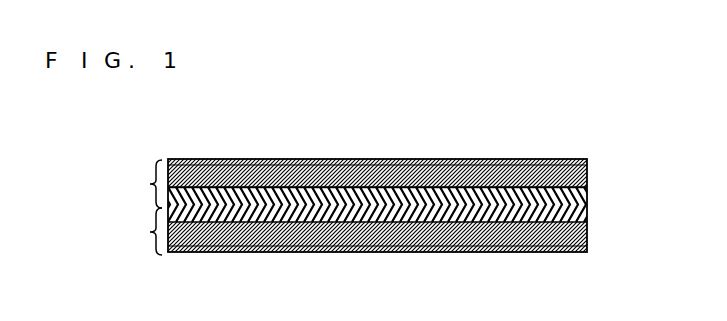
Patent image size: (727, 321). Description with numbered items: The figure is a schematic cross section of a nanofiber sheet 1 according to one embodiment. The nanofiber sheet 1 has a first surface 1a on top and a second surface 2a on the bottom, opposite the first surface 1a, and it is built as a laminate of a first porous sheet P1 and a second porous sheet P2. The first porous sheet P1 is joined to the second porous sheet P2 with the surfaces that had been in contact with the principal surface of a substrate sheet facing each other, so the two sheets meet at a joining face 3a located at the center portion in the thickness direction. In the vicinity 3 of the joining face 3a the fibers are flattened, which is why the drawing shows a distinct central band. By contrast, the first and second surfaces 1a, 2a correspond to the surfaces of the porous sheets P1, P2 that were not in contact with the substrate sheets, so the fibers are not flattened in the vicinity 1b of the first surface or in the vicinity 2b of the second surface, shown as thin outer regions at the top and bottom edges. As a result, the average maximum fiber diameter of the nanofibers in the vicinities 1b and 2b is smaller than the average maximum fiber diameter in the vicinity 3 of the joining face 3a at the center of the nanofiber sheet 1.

The nanofiber sheet 1 is at (616, 124).
The first surface 1a is at (397, 158).
The vicinity of the first surface 1b is at (588, 160).
The second surface 2a is at (358, 253).
The vicinity of the second surface 2b is at (588, 246).
The vicinity of the joining face 3 is at (588, 188).
The joining face 3a is at (467, 186).
The first porous sheet P1 is at (142, 184).
The second porous sheet P2 is at (142, 231).